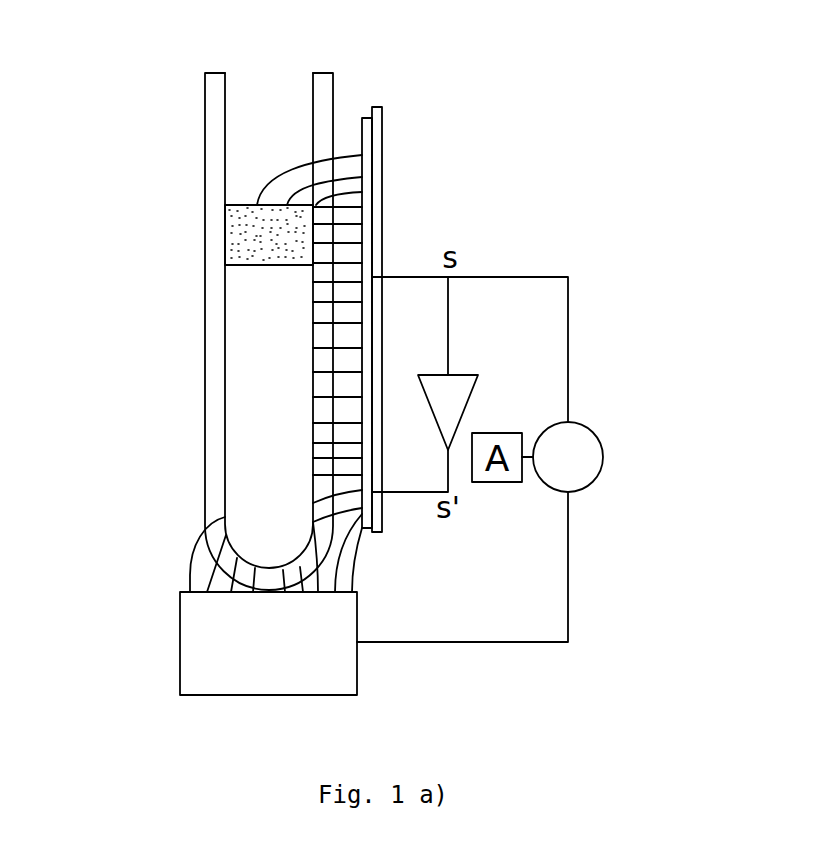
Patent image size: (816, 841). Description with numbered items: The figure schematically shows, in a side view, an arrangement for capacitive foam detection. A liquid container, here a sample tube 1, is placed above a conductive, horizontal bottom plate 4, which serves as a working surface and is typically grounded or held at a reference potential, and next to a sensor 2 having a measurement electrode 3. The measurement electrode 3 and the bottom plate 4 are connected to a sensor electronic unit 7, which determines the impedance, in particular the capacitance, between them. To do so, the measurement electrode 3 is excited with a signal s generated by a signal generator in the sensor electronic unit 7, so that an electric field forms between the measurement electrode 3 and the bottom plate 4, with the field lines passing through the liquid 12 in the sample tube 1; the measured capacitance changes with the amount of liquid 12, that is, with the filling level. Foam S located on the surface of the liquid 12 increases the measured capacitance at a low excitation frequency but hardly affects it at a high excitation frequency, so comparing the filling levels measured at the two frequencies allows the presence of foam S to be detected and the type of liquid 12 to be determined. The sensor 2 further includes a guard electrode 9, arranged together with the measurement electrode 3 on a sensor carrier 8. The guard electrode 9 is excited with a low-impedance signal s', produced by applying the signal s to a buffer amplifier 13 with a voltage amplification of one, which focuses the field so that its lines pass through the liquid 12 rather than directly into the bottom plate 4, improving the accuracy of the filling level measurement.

The sample tube 1 is at (198, 123).
The sensor 2 is at (397, 100).
The measurement electrode 3 is at (368, 113).
The bottom plate 4 is at (172, 633).
The sensor electronic unit 7 is at (608, 440).
The sensor carrier 8 is at (387, 182).
The guard electrode 9 is at (372, 533).
The liquid 12 is at (232, 340).
The buffer amplifier 13 is at (470, 368).
The foam S is at (238, 233).